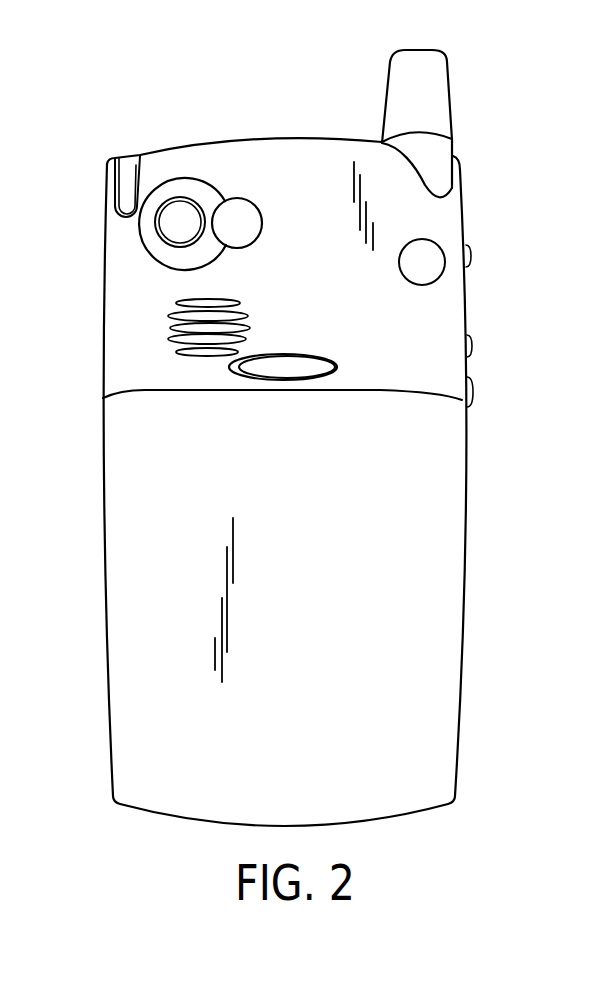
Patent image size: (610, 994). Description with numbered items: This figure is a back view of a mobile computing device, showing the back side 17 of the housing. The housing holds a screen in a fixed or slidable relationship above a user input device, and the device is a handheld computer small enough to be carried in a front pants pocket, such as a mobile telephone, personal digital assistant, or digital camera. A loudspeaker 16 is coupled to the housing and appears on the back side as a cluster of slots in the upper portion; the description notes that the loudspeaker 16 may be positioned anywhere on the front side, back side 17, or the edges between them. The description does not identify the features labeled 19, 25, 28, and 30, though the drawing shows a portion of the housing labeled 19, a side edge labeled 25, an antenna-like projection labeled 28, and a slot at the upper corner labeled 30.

The loudspeaker 16 is at (172, 328).
The back side 17 is at (334, 595).
The rear housing portion 19 is at (445, 468).
The housing side wall 25 is at (107, 558).
The antenna 28 is at (450, 110).
The latch slot 30 is at (133, 157).